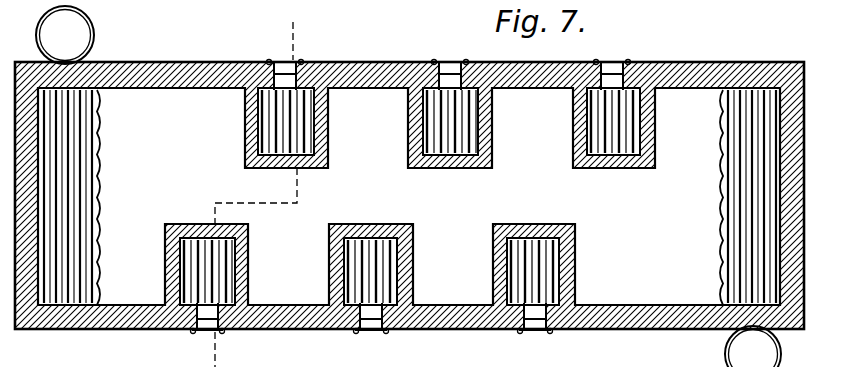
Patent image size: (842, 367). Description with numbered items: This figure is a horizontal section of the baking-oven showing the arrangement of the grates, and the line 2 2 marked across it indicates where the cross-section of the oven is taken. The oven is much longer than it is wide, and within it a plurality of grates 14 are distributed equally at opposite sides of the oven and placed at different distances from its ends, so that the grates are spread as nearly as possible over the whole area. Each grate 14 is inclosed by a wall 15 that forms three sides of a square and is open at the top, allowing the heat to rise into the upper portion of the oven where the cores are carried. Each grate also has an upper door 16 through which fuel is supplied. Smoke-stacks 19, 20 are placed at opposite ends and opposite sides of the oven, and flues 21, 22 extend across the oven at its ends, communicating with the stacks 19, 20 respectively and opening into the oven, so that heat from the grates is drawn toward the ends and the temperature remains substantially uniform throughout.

The section line 2 2 is at (252, 185).
The grate 14 is at (282, 118).
The wall 15 is at (268, 185).
The upper door 16 is at (290, 62).
The smoke-stack 19 is at (65, 35).
The smoke-stack 20 is at (753, 346).
The flue 21 is at (73, 200).
The flue 22 is at (740, 193).